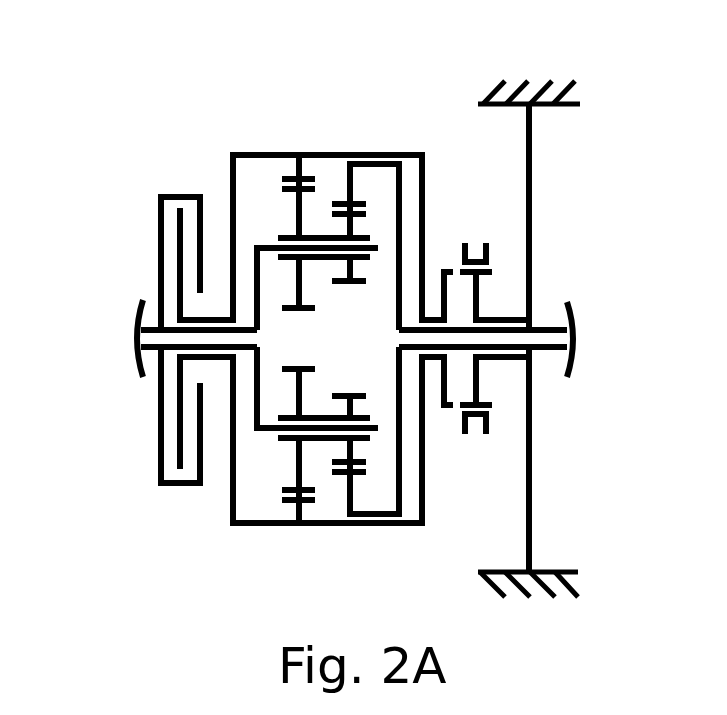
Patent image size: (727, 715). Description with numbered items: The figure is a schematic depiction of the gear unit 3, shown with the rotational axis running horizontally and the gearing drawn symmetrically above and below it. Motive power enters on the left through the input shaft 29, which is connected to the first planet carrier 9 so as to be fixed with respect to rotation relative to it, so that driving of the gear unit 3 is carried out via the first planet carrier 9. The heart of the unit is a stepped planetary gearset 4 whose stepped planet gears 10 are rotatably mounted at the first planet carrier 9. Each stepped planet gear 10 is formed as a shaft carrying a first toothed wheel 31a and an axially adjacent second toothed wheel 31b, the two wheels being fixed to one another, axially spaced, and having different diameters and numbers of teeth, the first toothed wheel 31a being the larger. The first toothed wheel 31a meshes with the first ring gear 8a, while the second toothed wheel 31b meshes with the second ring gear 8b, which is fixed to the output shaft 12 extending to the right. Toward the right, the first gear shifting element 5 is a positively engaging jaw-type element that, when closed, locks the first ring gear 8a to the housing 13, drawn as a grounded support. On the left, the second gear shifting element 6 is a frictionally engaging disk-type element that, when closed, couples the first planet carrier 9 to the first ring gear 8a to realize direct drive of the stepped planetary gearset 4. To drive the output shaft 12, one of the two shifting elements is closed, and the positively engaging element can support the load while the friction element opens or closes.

The gear unit 3 is at (147, 98).
The stepped planetary gearset 4 is at (327, 170).
The first gear shifting element 5 is at (474, 443).
The second gear shifting element 6 is at (177, 500).
The first ring gear 8a is at (311, 178).
The second ring gear 8b is at (335, 475).
The first planet carrier 9 is at (265, 430).
The stepped planet gear 10 is at (318, 442).
The output shaft 12 is at (543, 325).
The housing 13 is at (553, 83).
The input shaft 29 is at (153, 302).
The first toothed wheel 31a is at (284, 190).
The second toothed wheel 31b is at (362, 216).